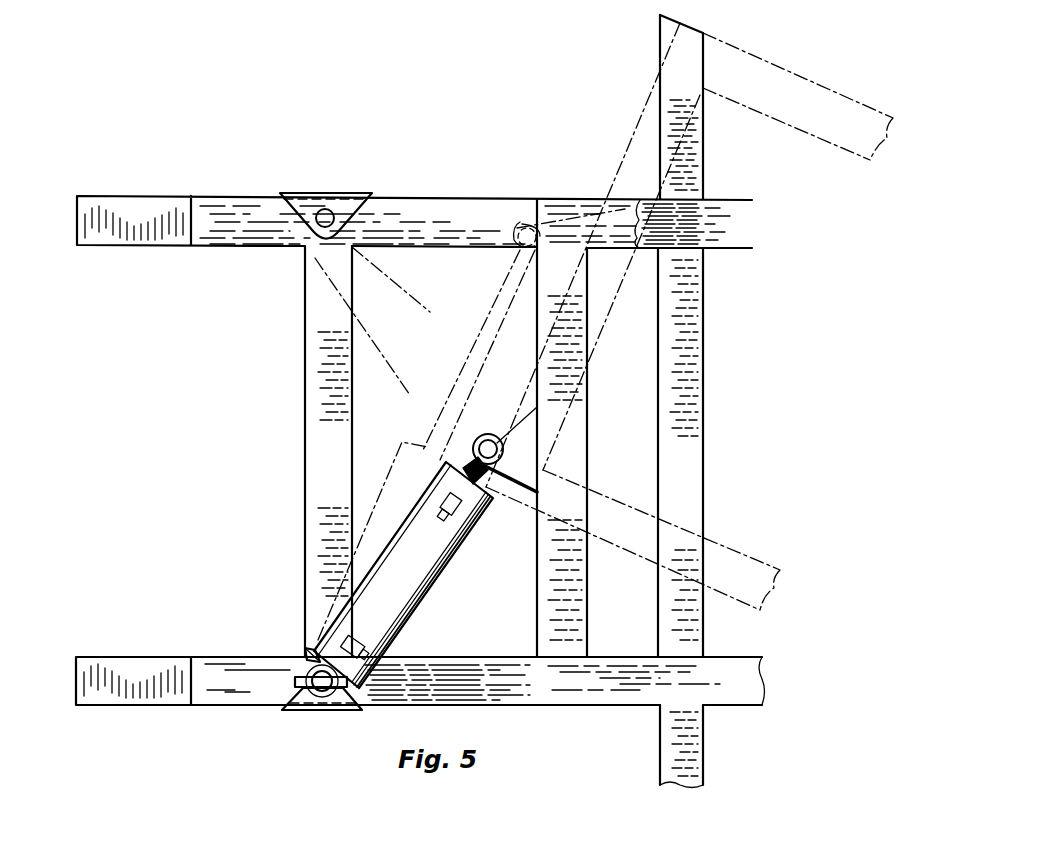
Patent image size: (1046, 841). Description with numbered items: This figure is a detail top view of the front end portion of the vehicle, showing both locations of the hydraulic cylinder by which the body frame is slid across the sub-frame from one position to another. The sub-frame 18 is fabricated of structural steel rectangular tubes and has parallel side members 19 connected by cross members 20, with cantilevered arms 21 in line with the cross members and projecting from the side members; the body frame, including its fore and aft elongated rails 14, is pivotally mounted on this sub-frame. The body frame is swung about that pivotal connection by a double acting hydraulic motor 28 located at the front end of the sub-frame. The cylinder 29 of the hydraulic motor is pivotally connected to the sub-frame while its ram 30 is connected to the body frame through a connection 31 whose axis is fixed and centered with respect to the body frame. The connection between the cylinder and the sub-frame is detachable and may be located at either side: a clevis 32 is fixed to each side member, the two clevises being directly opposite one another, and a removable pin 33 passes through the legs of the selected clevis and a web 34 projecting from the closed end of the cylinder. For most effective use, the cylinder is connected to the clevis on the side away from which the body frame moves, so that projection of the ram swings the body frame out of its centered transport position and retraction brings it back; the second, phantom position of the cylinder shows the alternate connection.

The elongated rails 14 is at (627, 212).
The sub-frame 18 is at (260, 184).
The side members 19 is at (464, 212).
The cross members 20 is at (322, 502).
The cantilevered arms 21 is at (690, 138).
The double acting hydraulic motor 28 is at (450, 580).
The cylinder 29 is at (327, 263).
The ram 30 is at (482, 318).
The connection 31 is at (516, 250).
The clevis 32 is at (318, 195).
The removable pin 33 is at (295, 682).
The web 34 is at (308, 650).